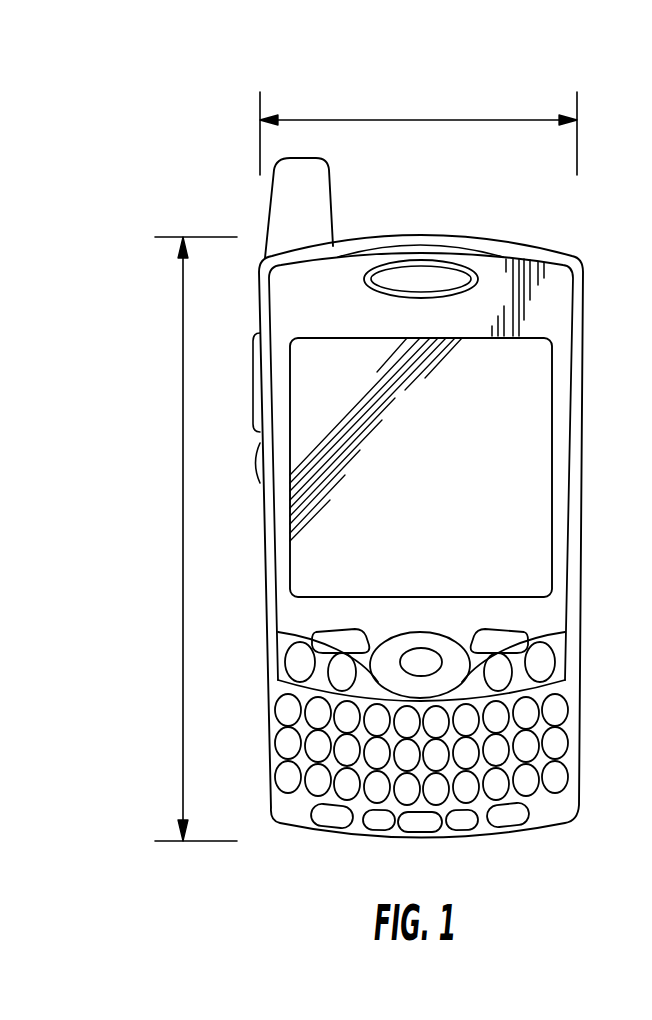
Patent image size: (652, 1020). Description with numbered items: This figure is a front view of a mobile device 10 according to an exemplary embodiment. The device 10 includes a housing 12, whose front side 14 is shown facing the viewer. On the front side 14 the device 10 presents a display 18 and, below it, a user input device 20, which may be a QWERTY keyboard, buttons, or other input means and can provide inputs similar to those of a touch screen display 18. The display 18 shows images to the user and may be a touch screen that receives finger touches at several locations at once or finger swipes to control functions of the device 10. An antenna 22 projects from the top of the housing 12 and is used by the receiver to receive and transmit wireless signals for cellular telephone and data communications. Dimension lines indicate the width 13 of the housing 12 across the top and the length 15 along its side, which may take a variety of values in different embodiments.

The device 10 is at (461, 209).
The housing 12 is at (548, 280).
The width 13 is at (450, 118).
The front side 14 is at (326, 306).
The length 15 is at (183, 496).
The display 18 is at (535, 422).
The user input device 20 is at (560, 705).
The antenna 22 is at (315, 212).